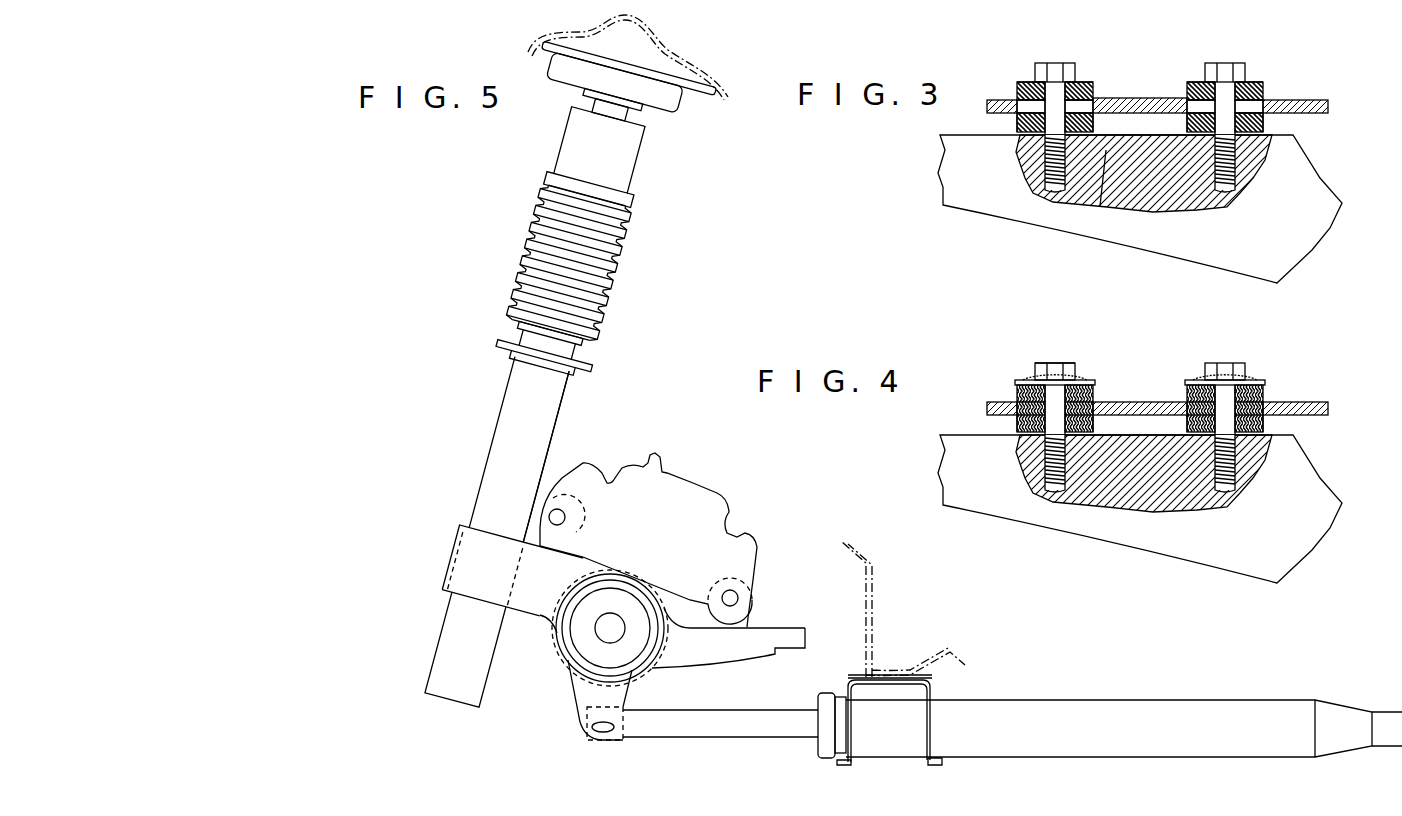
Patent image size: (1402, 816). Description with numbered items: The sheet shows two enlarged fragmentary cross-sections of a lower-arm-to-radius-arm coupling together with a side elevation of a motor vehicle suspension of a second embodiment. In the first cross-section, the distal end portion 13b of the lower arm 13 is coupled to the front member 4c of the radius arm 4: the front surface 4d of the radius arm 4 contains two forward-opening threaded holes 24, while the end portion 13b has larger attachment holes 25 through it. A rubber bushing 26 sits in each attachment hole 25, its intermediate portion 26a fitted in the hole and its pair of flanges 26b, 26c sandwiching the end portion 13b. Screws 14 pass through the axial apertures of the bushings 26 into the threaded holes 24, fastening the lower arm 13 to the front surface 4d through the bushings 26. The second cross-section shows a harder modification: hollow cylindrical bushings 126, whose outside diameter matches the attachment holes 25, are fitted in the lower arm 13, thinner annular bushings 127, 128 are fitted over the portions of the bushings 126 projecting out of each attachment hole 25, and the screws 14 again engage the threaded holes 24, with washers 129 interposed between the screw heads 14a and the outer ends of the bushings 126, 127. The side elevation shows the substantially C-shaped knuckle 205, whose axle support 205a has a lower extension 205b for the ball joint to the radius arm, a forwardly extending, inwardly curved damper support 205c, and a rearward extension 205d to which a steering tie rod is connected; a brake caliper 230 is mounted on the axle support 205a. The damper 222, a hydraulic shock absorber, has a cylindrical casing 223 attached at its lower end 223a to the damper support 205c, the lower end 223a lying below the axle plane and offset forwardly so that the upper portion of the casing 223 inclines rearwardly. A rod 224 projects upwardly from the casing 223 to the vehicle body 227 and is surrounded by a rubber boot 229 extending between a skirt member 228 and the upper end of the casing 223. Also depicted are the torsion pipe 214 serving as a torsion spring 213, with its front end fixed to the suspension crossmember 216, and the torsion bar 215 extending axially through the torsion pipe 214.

In FIG. 3, the radius arm 4 is at (1140, 213).
In FIG. 4, the radius arm 4 is at (1150, 528).
In FIG. 3, the front member 4c is at (1102, 190).
In FIG. 3, the front surface 4d is at (1150, 130).
In FIG. 3, the lower arm 13 is at (1173, 86).
In FIG. 4, the lower arm 13 is at (1131, 401).
In FIG. 3, the distal end portion 13b is at (1140, 100).
In FIG. 3, the screw 14 is at (1050, 68).
In FIG. 4, the screw 14 is at (1128, 360).
In FIG. 4, the screw head 14a is at (1052, 388).
In FIG. 3, the threaded hole 24 is at (1040, 195).
In FIG. 4, the threaded hole 24 is at (1042, 498).
In FIG. 3, the attachment hole 25 is at (1085, 105).
In FIG. 4, the attachment hole 25 is at (985, 410).
In FIG. 3, the bushing 26 is at (1163, 146).
In FIG. 3, the intermediate portion 26a is at (1002, 118).
In FIG. 3, the flange 26b is at (1078, 90).
In FIG. 3, the flange 26c is at (1085, 132).
In FIG. 4, the hollow cylindrical bushing 126 is at (1103, 492).
In FIG. 4, the annular bushing 127 is at (1114, 366).
In FIG. 4, the annular bushing 128 is at (1092, 455).
In FIG. 4, the washer 129 is at (1015, 385).
In FIG. 5, the knuckle 205 is at (558, 640).
In FIG. 5, the axle support 205a is at (632, 648).
In FIG. 5, the lower extension 205b is at (584, 700).
In FIG. 5, the damper support 205c is at (456, 545).
In FIG. 5, the rearward extension 205d is at (786, 637).
In FIG. 5, the torsion spring 213 is at (1208, 692).
In FIG. 5, the torsion pipe 214 is at (1117, 718).
In FIG. 5, the torsion bar 215 is at (760, 728).
In FIG. 5, the suspension crossmember 216 is at (932, 725).
In FIG. 5, the damper 222 is at (566, 424).
In FIG. 5, the cylindrical casing 223 is at (497, 448).
In FIG. 5, the lower end 223a is at (466, 690).
In FIG. 5, the rod 224 is at (607, 105).
In FIG. 5, the vehicle body 227 is at (700, 60).
In FIG. 5, the skirt member 228 is at (625, 170).
In FIG. 5, the rubber boot 229 is at (620, 263).
In FIG. 5, the brake caliper 230 is at (705, 515).